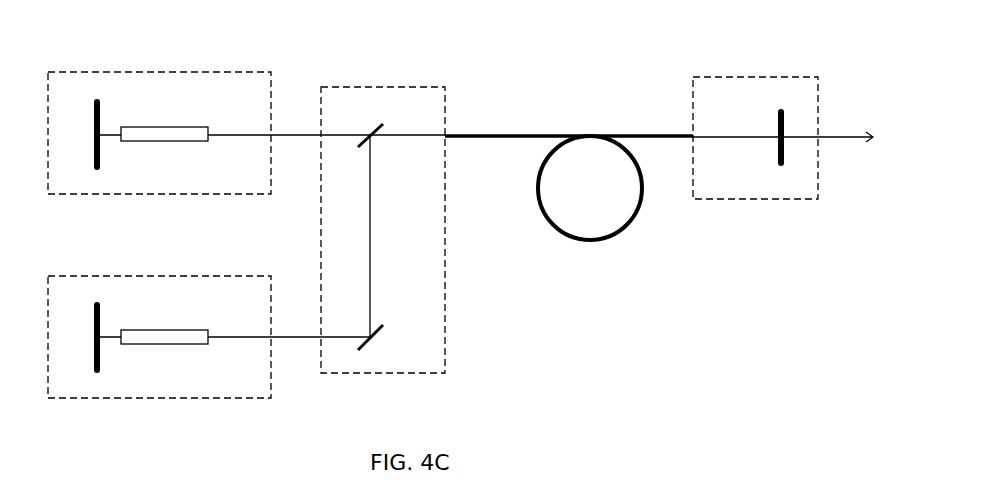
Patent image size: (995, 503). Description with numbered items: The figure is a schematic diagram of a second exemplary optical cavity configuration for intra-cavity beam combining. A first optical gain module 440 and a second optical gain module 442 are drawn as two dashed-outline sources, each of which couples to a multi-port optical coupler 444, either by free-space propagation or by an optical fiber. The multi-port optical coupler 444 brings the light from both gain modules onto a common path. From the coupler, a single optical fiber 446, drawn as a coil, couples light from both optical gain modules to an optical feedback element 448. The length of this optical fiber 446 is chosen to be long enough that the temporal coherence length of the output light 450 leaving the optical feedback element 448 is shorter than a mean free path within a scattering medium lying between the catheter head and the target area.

The first optical gain module 440 is at (171, 72).
The second optical gain module 442 is at (168, 276).
The multi-port optical coupler 444 is at (398, 87).
The optical fiber 446 is at (545, 253).
The optical feedback element 448 is at (762, 77).
The output light 450 is at (837, 138).